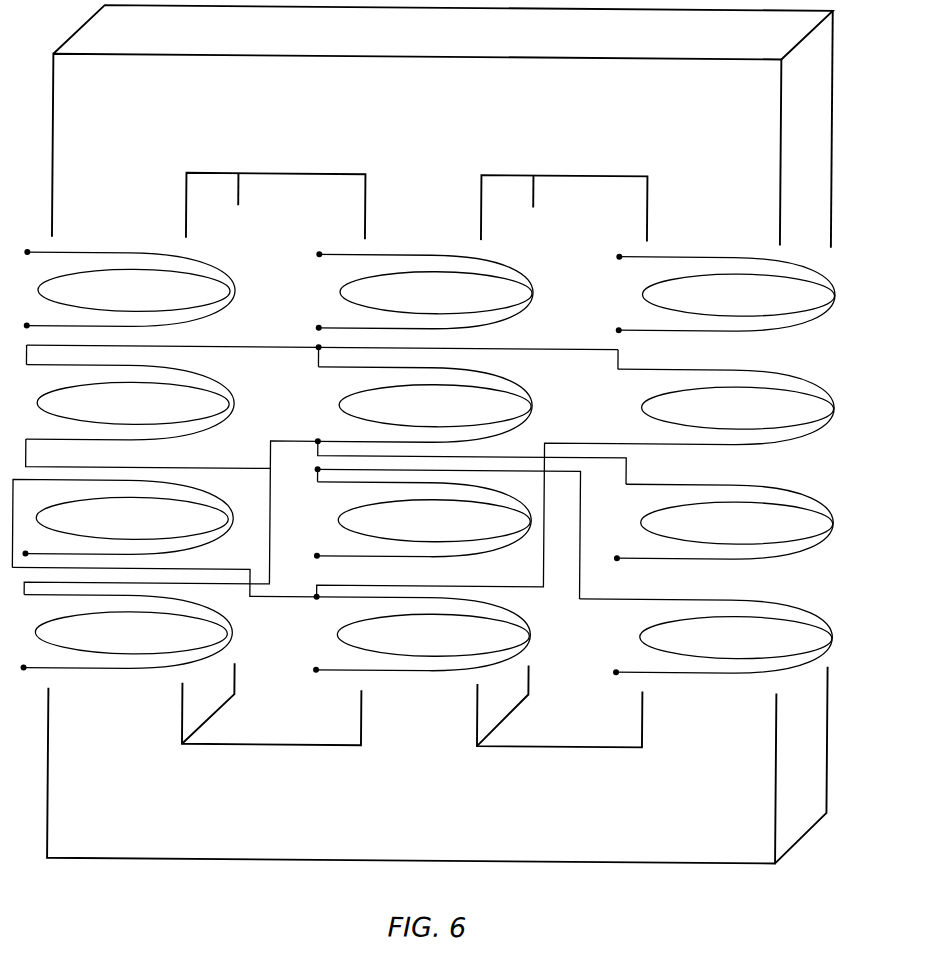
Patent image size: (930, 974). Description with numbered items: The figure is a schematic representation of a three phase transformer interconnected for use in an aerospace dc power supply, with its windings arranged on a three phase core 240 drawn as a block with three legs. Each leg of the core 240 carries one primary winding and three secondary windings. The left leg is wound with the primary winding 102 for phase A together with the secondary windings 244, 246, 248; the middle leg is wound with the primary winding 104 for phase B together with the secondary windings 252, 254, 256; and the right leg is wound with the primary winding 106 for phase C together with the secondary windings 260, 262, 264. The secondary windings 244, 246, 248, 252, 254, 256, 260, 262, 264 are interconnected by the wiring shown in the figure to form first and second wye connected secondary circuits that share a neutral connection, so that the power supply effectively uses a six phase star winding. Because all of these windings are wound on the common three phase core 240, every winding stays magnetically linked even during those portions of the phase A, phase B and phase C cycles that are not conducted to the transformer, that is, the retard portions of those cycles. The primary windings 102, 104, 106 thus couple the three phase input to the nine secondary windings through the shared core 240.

The primary winding for phase A 102 is at (138, 256).
The primary winding for phase B 104 is at (440, 256).
The primary winding for phase C 106 is at (732, 256).
The three phase core 240 is at (435, 808).
The secondary winding 244 is at (228, 387).
The secondary winding 246 is at (192, 483).
The secondary winding 248 is at (231, 612).
The secondary winding 252 is at (529, 387).
The secondary winding 254 is at (532, 505).
The secondary winding 256 is at (531, 614).
The secondary winding 260 is at (757, 370).
The secondary winding 262 is at (757, 481).
The secondary winding 264 is at (757, 598).